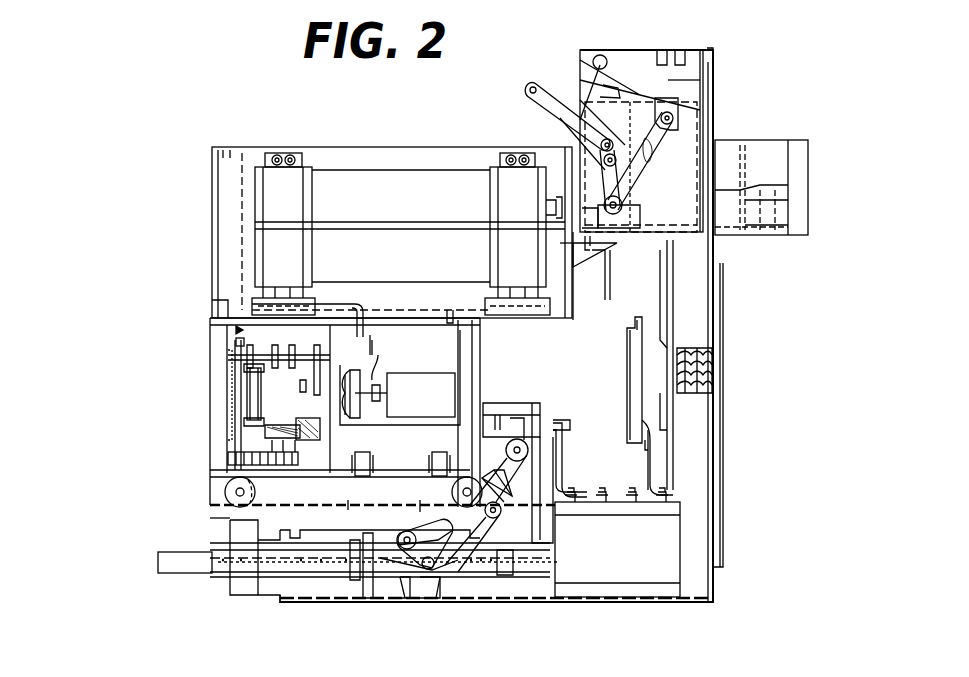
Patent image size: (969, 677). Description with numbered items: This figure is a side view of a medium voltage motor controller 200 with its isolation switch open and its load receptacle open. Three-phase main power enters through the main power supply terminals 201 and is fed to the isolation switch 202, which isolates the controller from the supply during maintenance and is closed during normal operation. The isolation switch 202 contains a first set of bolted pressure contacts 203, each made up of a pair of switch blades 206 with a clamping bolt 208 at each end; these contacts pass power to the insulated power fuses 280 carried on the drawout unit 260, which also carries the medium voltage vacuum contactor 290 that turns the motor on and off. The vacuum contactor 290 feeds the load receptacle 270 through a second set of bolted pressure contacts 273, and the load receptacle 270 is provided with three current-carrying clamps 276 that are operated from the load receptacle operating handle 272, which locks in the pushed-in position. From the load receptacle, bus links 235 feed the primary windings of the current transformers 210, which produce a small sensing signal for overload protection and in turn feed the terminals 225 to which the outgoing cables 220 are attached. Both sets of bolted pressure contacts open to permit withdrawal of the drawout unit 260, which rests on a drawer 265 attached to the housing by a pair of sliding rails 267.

The motor controller 200 is at (837, 530).
The main power supply terminals 201 is at (722, 200).
The isolation switch 202 is at (778, 140).
The first set of bolted pressure contacts 203 is at (660, 220).
The switch blades 206 is at (580, 130).
The clamping bolt 208 is at (627, 198).
The current transformers 210 is at (673, 555).
The outgoing cables 220 is at (642, 337).
The terminals 225 is at (643, 445).
The bus links 235 is at (560, 460).
The drawout unit 260 is at (212, 147).
The drawer 265 is at (273, 530).
The sliding rails 267 is at (262, 562).
The load receptacle 270 is at (532, 403).
The load receptacle operating handle 272 is at (158, 558).
The second set of bolted pressure contacts 273 is at (522, 495).
The current-carrying clamps 276 is at (520, 440).
The insulated power fuses 280 is at (388, 240).
The medium voltage vacuum contactor 290 is at (202, 372).